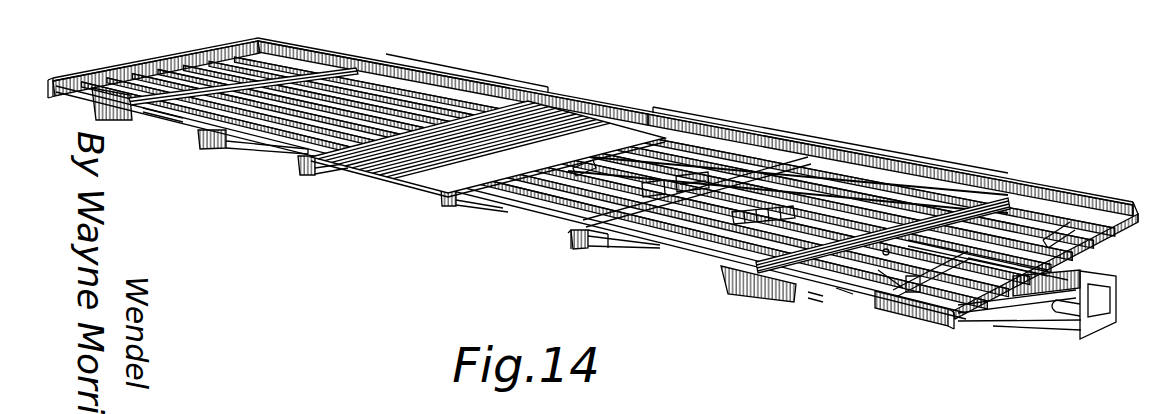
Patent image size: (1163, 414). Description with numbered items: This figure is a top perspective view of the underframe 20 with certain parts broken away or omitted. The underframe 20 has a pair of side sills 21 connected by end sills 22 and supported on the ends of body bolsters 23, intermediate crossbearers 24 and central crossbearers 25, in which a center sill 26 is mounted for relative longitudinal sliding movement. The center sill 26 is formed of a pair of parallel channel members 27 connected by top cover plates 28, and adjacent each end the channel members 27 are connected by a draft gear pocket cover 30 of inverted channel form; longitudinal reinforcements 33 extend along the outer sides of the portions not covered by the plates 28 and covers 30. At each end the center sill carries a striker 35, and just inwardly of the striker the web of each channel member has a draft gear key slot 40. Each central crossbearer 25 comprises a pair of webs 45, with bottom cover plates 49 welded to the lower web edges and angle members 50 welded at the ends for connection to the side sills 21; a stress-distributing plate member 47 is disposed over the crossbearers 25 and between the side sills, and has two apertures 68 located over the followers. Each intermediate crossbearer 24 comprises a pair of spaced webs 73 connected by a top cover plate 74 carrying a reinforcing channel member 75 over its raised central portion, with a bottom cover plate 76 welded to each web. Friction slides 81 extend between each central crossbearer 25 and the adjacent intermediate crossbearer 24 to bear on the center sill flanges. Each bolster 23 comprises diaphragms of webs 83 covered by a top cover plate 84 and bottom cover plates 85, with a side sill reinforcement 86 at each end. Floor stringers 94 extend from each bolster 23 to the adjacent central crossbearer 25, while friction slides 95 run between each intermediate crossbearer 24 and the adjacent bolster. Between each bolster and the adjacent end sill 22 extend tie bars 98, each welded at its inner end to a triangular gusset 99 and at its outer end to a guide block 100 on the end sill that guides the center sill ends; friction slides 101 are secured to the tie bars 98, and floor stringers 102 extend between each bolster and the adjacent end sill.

The underframe 20 is at (670, 107).
The side sills 21 is at (468, 77).
The end sills 22 is at (143, 55).
The body bolsters 23 is at (160, 113).
The intermediate crossbearers 24 is at (233, 138).
The central crossbearers 25 is at (312, 169).
The center sill 26 is at (1035, 317).
The channel members 27 is at (1008, 296).
The top cover plates 28 is at (570, 160).
The draft gear pocket cover 30 is at (1080, 267).
The longitudinal reinforcements 33 is at (903, 289).
The striker 35 is at (1108, 281).
The draft gear key slot 40 is at (1053, 303).
The webs 45 is at (446, 201).
The stress-distributing plate member 47 is at (403, 176).
The bottom cover plates 49 is at (330, 168).
The angle members 50 is at (292, 160).
The apertures 68 is at (452, 133).
The webs 73 is at (607, 232).
The top cover plate 74 is at (568, 215).
The reinforcing channel member 75 is at (675, 184).
The bottom cover plate 76 is at (587, 243).
The friction slides 81 is at (653, 189).
The webs 83 is at (887, 270).
The top cover plate 84 is at (130, 111).
The bottom cover plates 85 is at (808, 288).
The side sill reinforcement 86 is at (86, 104).
The floor stringers 94 is at (810, 177).
The friction slides 95 is at (770, 218).
The tie bars 98 is at (955, 237).
The triangular gusset 99 is at (877, 241).
The guide block 100 is at (1033, 261).
The friction slides 101 is at (985, 238).
The floor stringers 102 is at (1047, 221).